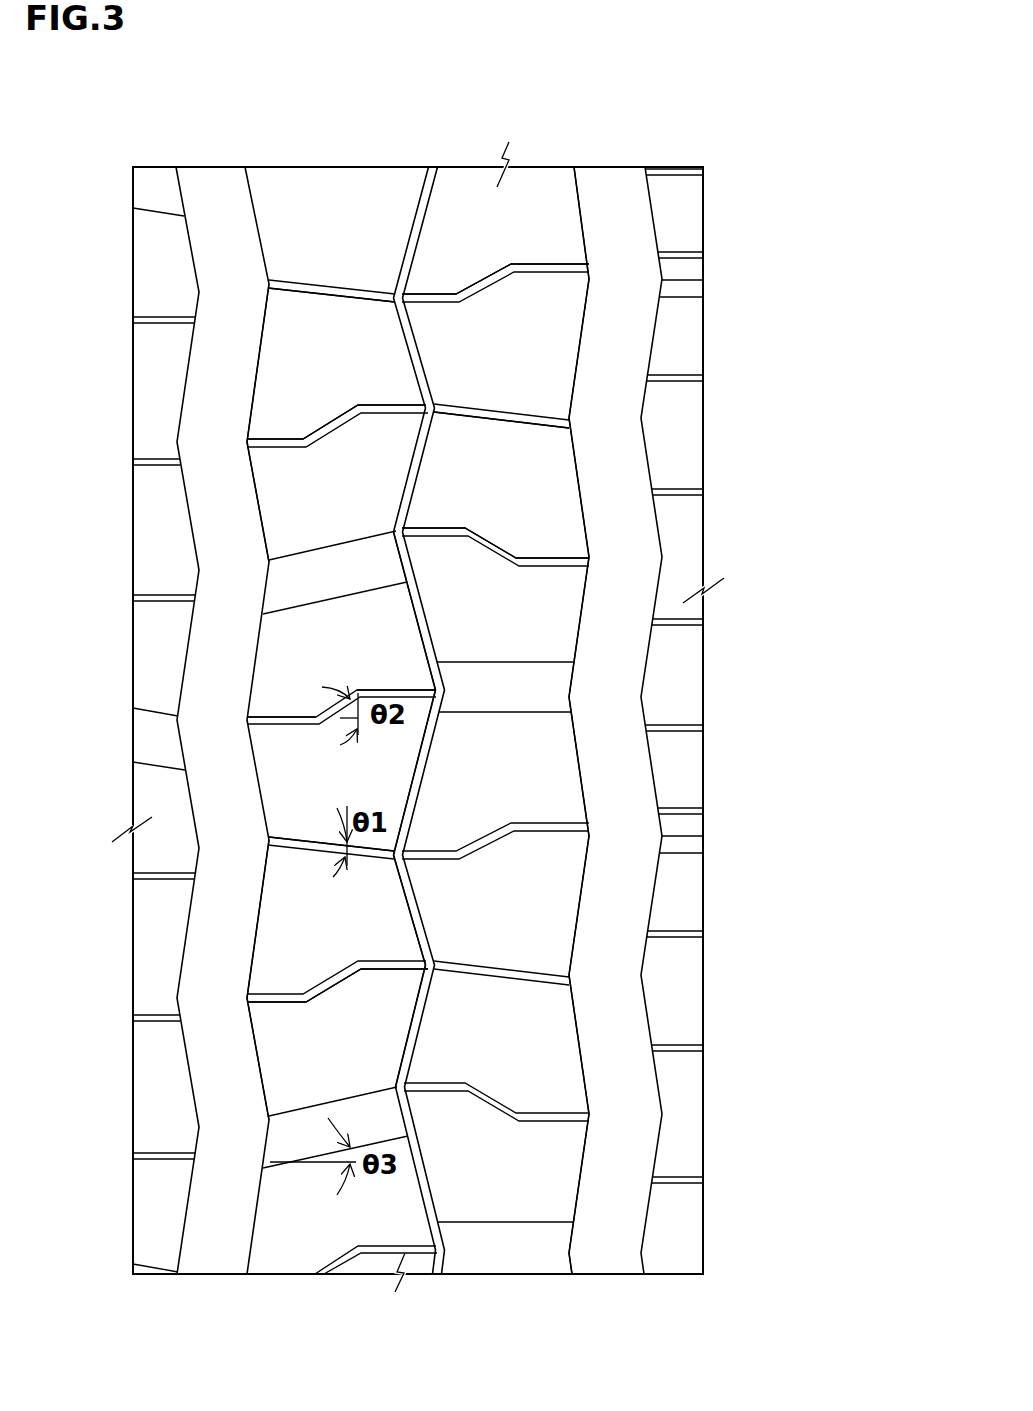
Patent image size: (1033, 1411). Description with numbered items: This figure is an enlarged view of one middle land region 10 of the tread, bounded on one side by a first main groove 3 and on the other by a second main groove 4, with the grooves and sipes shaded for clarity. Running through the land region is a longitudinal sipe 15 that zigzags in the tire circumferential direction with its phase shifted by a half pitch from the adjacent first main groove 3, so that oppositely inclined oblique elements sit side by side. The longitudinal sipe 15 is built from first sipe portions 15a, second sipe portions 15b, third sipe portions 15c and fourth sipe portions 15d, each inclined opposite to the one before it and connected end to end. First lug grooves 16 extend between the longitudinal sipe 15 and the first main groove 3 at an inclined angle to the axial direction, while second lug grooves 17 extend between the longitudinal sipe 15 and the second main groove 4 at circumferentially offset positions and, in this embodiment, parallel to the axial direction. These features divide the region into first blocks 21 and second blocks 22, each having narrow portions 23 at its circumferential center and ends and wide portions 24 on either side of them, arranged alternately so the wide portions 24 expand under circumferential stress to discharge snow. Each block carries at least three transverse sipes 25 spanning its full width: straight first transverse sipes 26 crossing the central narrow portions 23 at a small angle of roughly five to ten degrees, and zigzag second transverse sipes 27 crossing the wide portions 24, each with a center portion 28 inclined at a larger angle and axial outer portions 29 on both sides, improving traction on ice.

The first main groove 3 is at (216, 220).
The second main groove 4 is at (614, 210).
The middle land region 10 is at (372, 214).
The longitudinal sipe 15 is at (422, 222).
The first sipe portion 15a is at (434, 636).
The second sipe portion 15b is at (432, 770).
The third sipe portion 15c is at (420, 908).
The fourth sipe portion 15d is at (427, 1002).
The first lug groove 16 is at (334, 573).
The second lug groove 17 is at (519, 690).
The first block 21 is at (260, 307).
The second block 22 is at (590, 332).
The narrow portion 23 is at (348, 283).
The wide portion 24 is at (332, 410).
The transverse sipe 25 is at (62, 895).
The first transverse sipe 26 is at (314, 287).
The second transverse sipe 27 is at (337, 425).
The center portion 28 is at (342, 705).
The outer portion 29 is at (358, 700).